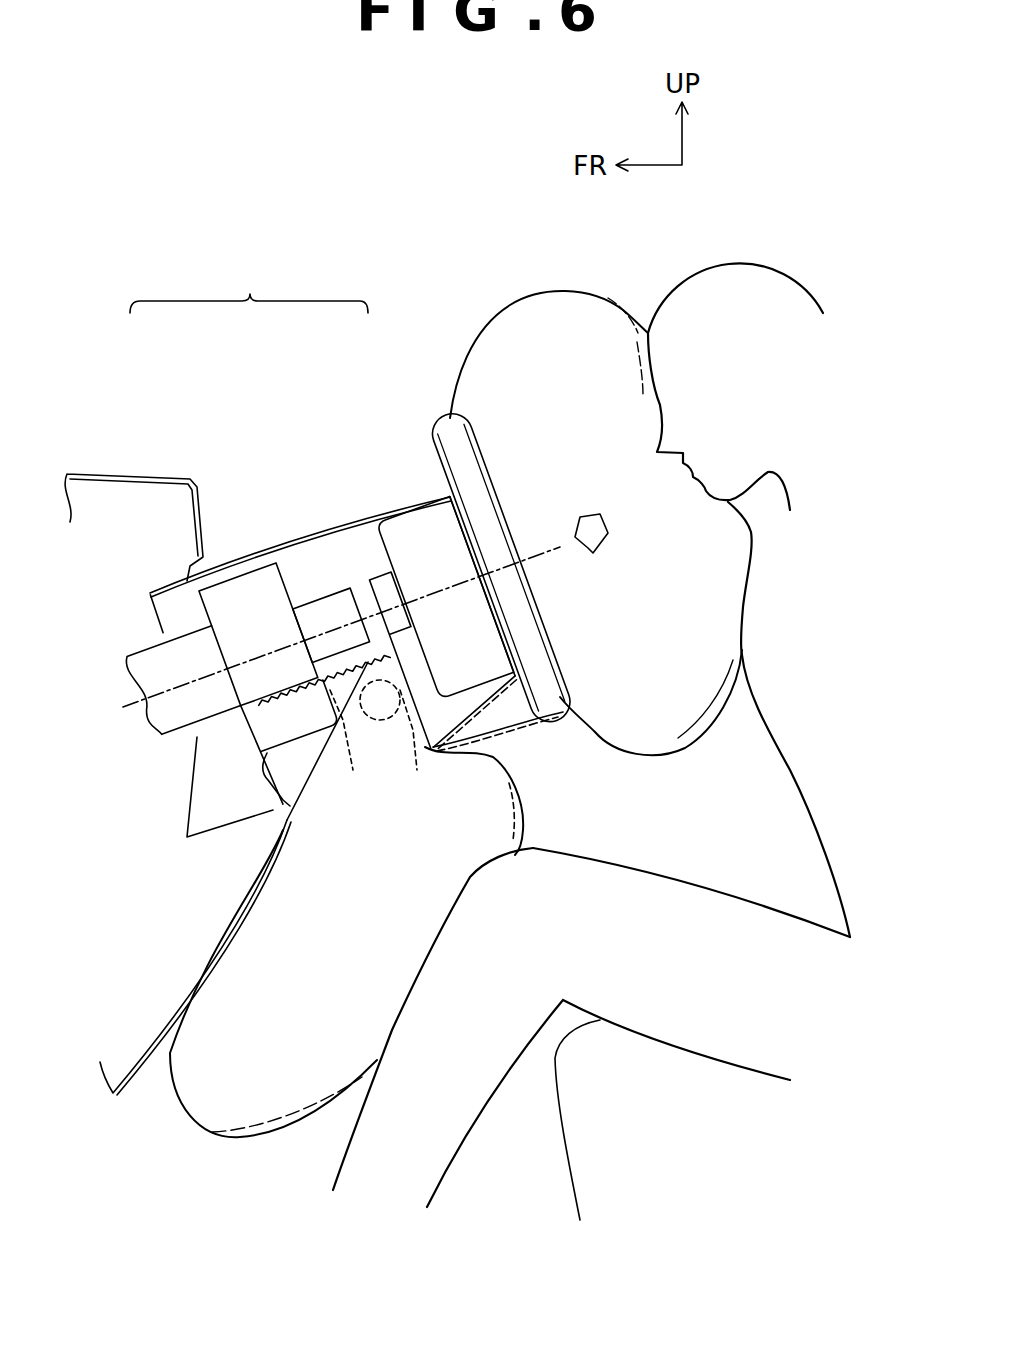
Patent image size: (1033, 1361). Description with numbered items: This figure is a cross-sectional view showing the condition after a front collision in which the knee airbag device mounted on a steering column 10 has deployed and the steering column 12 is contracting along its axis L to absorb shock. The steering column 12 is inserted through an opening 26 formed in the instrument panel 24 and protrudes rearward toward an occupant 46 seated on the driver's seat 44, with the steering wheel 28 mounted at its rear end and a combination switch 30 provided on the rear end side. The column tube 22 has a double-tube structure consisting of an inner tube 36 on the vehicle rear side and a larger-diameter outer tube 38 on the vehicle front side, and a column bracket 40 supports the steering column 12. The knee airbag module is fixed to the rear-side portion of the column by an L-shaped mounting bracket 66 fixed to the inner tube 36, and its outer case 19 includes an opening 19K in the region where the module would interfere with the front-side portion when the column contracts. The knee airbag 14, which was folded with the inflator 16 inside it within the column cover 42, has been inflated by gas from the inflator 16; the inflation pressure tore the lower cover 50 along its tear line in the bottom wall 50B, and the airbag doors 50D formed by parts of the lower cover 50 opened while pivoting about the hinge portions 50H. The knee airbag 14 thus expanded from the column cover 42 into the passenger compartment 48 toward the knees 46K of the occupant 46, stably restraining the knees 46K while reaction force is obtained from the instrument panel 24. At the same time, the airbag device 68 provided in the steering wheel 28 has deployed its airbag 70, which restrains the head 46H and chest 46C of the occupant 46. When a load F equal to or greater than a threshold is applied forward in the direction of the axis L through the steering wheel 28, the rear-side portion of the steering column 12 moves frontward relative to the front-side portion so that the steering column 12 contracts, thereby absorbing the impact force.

The knee airbag device mounted on a steering column 10 is at (565, 839).
The steering column 12 is at (295, 544).
The knee airbag 14 is at (528, 813).
The inflator 16 is at (416, 772).
The outer case 19 is at (258, 767).
The opening 19K is at (391, 797).
The column tube 22 is at (216, 534).
The instrument panel 24 is at (158, 480).
The opening 26 is at (220, 553).
The steering wheel 28 is at (443, 405).
The combination switch 30 is at (382, 512).
The inner tube 36 is at (355, 605).
The outer tube 38 is at (292, 615).
The column bracket 40 is at (240, 741).
The column cover 42 is at (376, 467).
The driver's seat 44 is at (578, 1165).
The occupant 46 is at (591, 696).
The head 46H is at (729, 263).
The chest 46C is at (742, 607).
The knees 46K is at (473, 875).
The passenger compartment 48 is at (293, 1192).
The lower cover 50 is at (387, 795).
The bottom wall 50B is at (207, 838).
The airbag doors 50D is at (508, 738).
The hinge portions 50H is at (292, 803).
The mounting bracket 66 is at (378, 592).
The airbag device 68 is at (596, 475).
The airbag 70 is at (574, 286).
The axis L is at (537, 547).
The load F is at (596, 508).